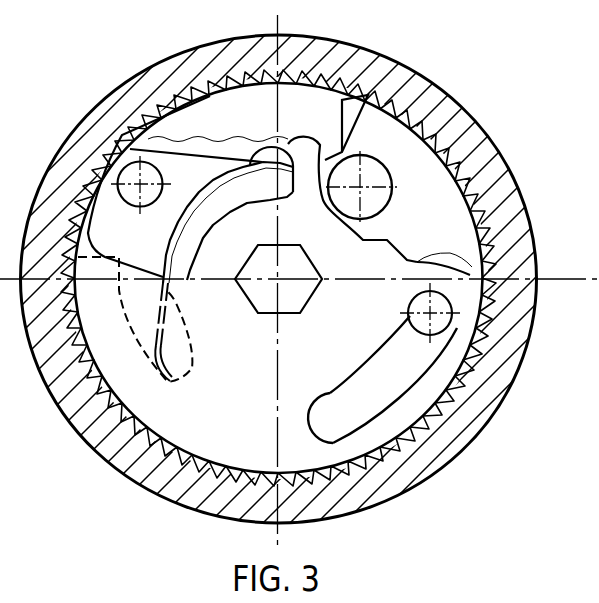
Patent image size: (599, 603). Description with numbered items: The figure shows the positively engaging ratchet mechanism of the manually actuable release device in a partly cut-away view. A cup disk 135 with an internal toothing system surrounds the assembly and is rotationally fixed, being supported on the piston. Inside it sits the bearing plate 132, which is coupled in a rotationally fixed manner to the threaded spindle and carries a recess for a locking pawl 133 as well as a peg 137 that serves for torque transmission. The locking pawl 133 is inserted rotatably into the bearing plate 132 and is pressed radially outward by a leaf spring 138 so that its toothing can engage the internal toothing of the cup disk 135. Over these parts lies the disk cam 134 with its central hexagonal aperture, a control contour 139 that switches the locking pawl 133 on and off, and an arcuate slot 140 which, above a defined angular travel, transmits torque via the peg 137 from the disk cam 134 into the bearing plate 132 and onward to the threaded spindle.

The bearing plate 132 is at (446, 228).
The locking pawl 133 is at (333, 137).
The disk cam 134 is at (392, 263).
The cup disk 135 is at (431, 106).
The peg 137 is at (449, 324).
The leaf spring 138 is at (181, 239).
The control contour 139 is at (230, 147).
The arcuate slot 140 is at (431, 383).